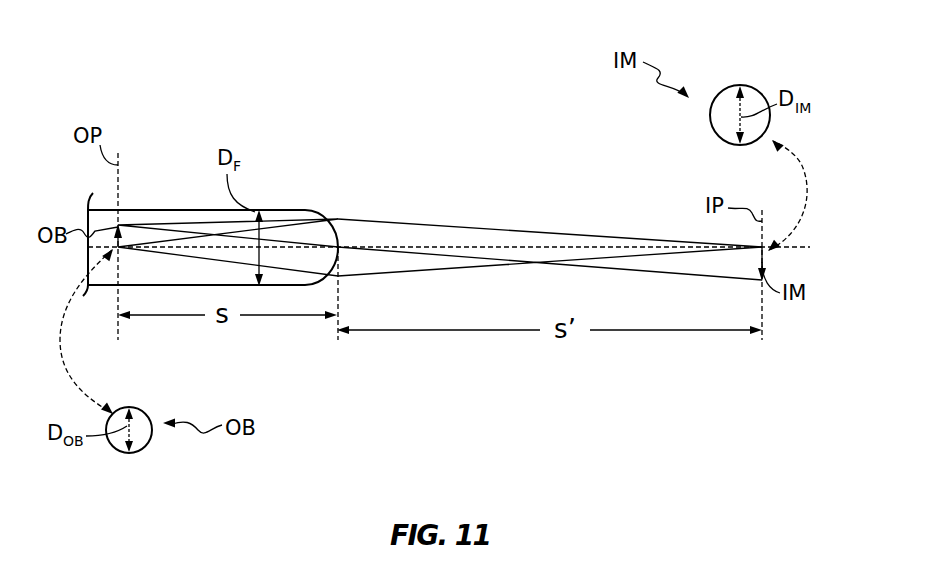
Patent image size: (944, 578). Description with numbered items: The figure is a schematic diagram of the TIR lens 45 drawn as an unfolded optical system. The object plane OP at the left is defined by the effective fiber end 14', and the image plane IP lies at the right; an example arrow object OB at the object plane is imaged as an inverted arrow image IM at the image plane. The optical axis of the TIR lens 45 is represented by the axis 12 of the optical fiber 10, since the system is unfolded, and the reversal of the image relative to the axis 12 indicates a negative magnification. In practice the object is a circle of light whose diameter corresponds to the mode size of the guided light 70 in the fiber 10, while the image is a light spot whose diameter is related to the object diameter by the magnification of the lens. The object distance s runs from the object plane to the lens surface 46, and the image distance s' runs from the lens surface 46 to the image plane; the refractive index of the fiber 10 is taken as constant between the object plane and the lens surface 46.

The optical fiber 10 is at (150, 113).
The TIR lens 45 is at (306, 74).
The lens surface 46 is at (316, 213).
The axis 12 is at (442, 247).
The guided light 70 is at (544, 233).
The effective fiber end 14' is at (146, 246).